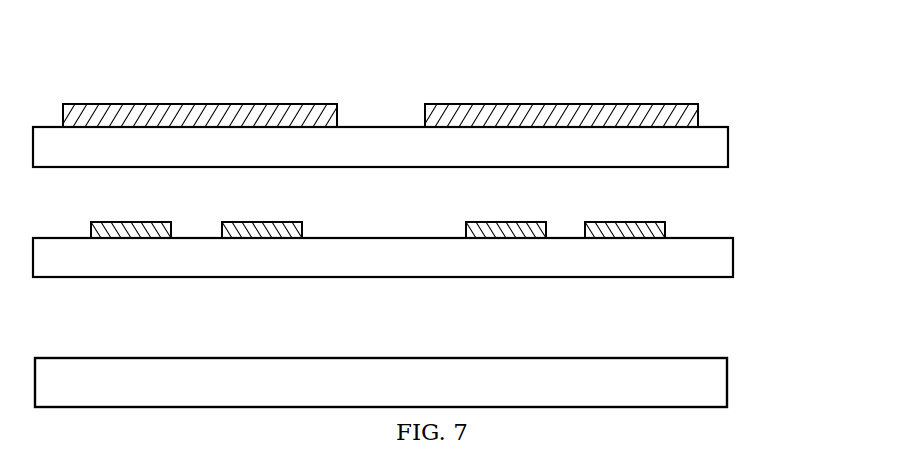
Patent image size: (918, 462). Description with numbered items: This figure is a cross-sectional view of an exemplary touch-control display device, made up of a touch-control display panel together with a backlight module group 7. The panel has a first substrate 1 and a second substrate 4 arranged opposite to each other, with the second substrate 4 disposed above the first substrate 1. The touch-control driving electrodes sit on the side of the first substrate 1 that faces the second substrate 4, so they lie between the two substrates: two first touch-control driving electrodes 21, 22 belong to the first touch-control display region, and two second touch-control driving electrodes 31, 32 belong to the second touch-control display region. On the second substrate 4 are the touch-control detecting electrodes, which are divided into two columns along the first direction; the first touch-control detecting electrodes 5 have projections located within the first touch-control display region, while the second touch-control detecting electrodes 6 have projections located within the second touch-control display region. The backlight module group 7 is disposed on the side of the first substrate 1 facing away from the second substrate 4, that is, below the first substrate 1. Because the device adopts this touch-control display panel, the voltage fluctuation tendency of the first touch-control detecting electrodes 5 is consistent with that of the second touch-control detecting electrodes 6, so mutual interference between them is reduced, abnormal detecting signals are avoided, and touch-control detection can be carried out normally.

The first substrate 1 is at (700, 255).
The second substrate 4 is at (707, 150).
The first touch-control detecting electrodes 5 is at (187, 115).
The second touch-control detecting electrodes 6 is at (678, 112).
The backlight module group 7 is at (693, 383).
The first touch-control driving electrode 21 is at (128, 238).
The first touch-control driving electrode 22 is at (260, 238).
The second touch-control driving electrode 31 is at (503, 238).
The second touch-control driving electrode 32 is at (622, 238).